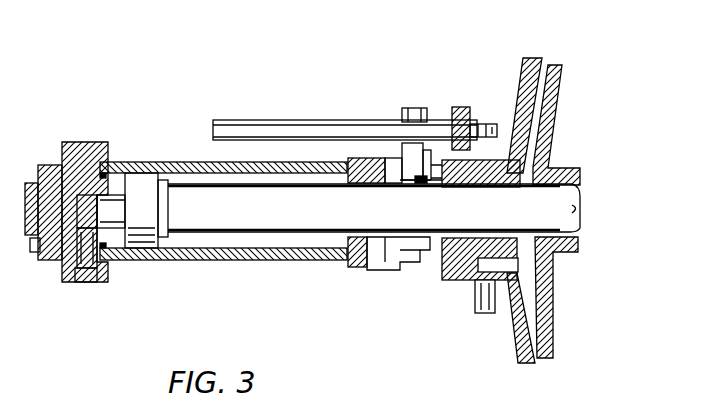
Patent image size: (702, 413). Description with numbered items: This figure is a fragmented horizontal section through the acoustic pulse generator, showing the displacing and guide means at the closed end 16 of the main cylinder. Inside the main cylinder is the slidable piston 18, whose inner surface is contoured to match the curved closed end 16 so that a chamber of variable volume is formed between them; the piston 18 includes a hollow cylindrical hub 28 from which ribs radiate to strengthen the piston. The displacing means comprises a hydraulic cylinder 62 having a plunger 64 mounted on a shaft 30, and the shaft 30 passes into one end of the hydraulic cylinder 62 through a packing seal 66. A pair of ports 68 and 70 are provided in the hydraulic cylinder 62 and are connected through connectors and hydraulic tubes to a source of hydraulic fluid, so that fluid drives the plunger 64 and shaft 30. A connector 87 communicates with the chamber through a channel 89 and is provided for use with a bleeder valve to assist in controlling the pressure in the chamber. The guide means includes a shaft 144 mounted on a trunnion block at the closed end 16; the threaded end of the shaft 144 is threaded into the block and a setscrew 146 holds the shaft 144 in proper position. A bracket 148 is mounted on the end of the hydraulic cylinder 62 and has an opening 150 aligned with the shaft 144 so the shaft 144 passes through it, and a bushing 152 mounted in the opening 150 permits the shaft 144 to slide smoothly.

The closed end 16 is at (522, 78).
The piston 18 is at (548, 122).
The hollow cylindrical hub 28 is at (563, 173).
The shaft 30 is at (560, 232).
The hydraulic cylinder 62 is at (165, 253).
The plunger 64 is at (137, 185).
The packing seal 66 is at (405, 240).
The port 68 is at (78, 282).
The port 70 is at (372, 268).
The connector 87 is at (478, 298).
The channel 89 is at (512, 310).
The shaft 144 is at (262, 132).
The setscrew 146 is at (460, 107).
The bracket 148 is at (420, 183).
The opening 150 is at (397, 122).
The bushing 152 is at (420, 108).